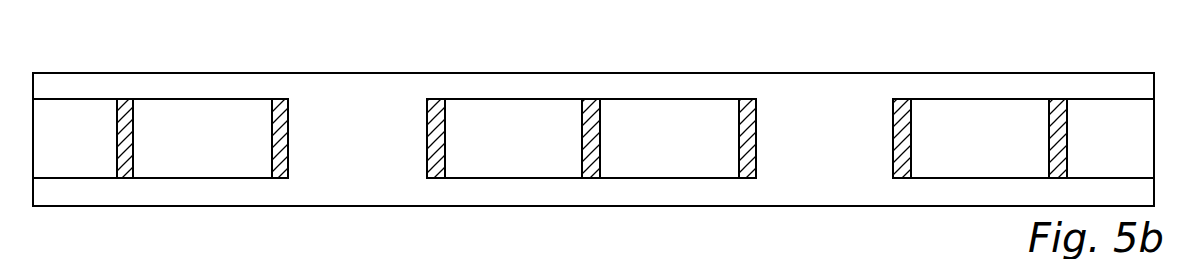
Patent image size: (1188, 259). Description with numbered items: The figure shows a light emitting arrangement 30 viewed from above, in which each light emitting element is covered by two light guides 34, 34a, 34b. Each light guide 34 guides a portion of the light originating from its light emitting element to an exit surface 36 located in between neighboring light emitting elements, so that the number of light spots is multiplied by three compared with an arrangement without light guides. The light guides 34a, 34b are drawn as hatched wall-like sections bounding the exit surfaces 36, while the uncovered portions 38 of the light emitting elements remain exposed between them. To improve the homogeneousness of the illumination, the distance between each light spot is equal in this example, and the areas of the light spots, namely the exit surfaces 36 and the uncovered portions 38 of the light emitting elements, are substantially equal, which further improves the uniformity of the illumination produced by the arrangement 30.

The body / substrate 30 is at (830, 103).
The light guide 34 is at (203, 115).
The light guide 34a is at (515, 117).
The light guide 34b is at (665, 113).
The exit surface 36 is at (280, 107).
The uncovered portion of the light emitting element 38 is at (123, 110).